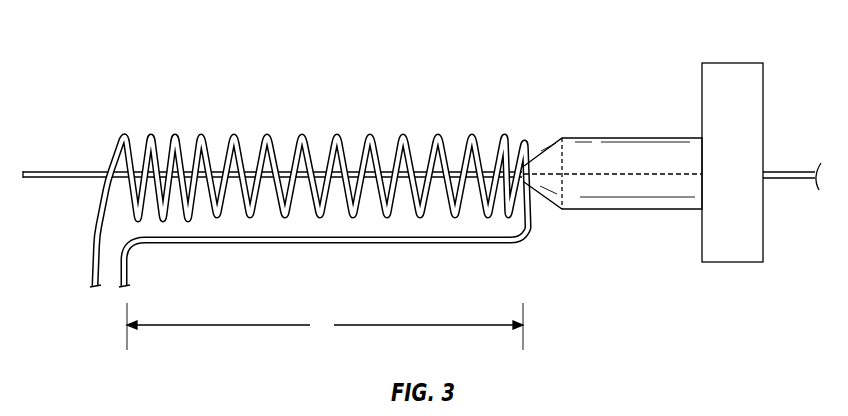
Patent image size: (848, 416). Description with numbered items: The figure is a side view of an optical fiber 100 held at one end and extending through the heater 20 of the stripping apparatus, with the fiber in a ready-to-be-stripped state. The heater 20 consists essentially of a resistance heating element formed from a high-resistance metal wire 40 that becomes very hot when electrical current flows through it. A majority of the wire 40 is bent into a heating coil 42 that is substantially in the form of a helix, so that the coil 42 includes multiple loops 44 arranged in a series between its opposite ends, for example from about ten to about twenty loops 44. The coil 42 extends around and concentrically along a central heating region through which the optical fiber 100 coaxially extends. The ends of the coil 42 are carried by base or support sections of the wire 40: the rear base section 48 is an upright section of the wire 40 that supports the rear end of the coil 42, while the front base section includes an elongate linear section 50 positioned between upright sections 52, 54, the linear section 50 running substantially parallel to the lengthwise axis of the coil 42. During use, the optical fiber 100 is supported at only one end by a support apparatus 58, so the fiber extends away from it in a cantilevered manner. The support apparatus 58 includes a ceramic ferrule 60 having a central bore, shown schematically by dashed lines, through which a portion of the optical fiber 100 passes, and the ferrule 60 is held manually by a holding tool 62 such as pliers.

The heater 20 is at (86, 306).
The optical fiber 100 is at (70, 168).
The wire 40 is at (300, 128).
The heating coil 42 is at (265, 116).
The loops 44 is at (292, 193).
The rear base section 48 is at (92, 259).
The linear section 50 is at (331, 244).
The upright section 52 is at (530, 231).
The upright section 54 is at (131, 270).
The support apparatus 58 is at (659, 234).
The ceramic ferrule 60 is at (612, 138).
The holding tool 62 is at (703, 60).